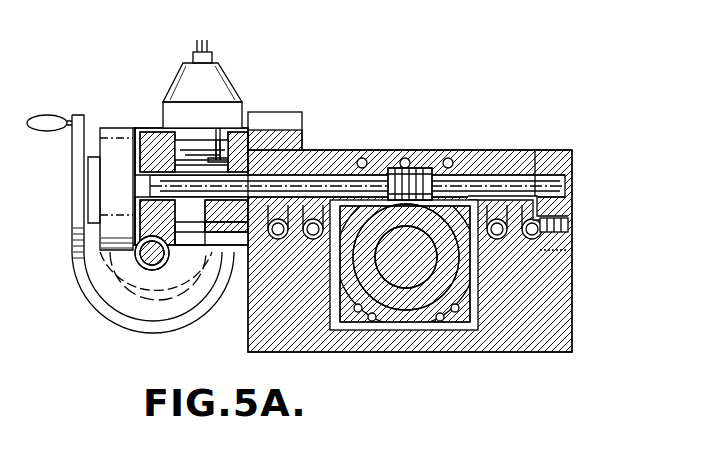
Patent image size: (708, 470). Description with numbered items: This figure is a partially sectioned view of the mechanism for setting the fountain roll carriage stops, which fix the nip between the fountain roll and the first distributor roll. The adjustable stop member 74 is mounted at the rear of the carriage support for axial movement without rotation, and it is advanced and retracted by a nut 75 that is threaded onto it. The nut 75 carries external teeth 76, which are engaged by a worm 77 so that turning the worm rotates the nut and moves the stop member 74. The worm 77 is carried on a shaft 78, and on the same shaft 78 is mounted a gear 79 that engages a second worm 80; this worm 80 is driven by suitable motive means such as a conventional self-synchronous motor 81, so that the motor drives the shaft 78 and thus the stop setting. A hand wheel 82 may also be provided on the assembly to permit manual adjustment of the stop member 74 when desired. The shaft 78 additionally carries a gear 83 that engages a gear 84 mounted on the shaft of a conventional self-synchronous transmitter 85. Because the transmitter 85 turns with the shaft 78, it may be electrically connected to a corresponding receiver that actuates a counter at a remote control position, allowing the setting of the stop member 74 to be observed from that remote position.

The stop member 74 is at (406, 257).
The nut 75 is at (418, 300).
The external teeth 76 is at (432, 300).
The worm 77 is at (414, 168).
The shaft 78 is at (326, 176).
The gear 79 is at (152, 140).
The worm 80 is at (152, 270).
The self-synchronous motor 81 is at (110, 300).
The hand wheel 82 is at (47, 131).
The gear 83 is at (225, 222).
The gear 84 is at (218, 140).
The self-synchronous transmitter 85 is at (200, 148).